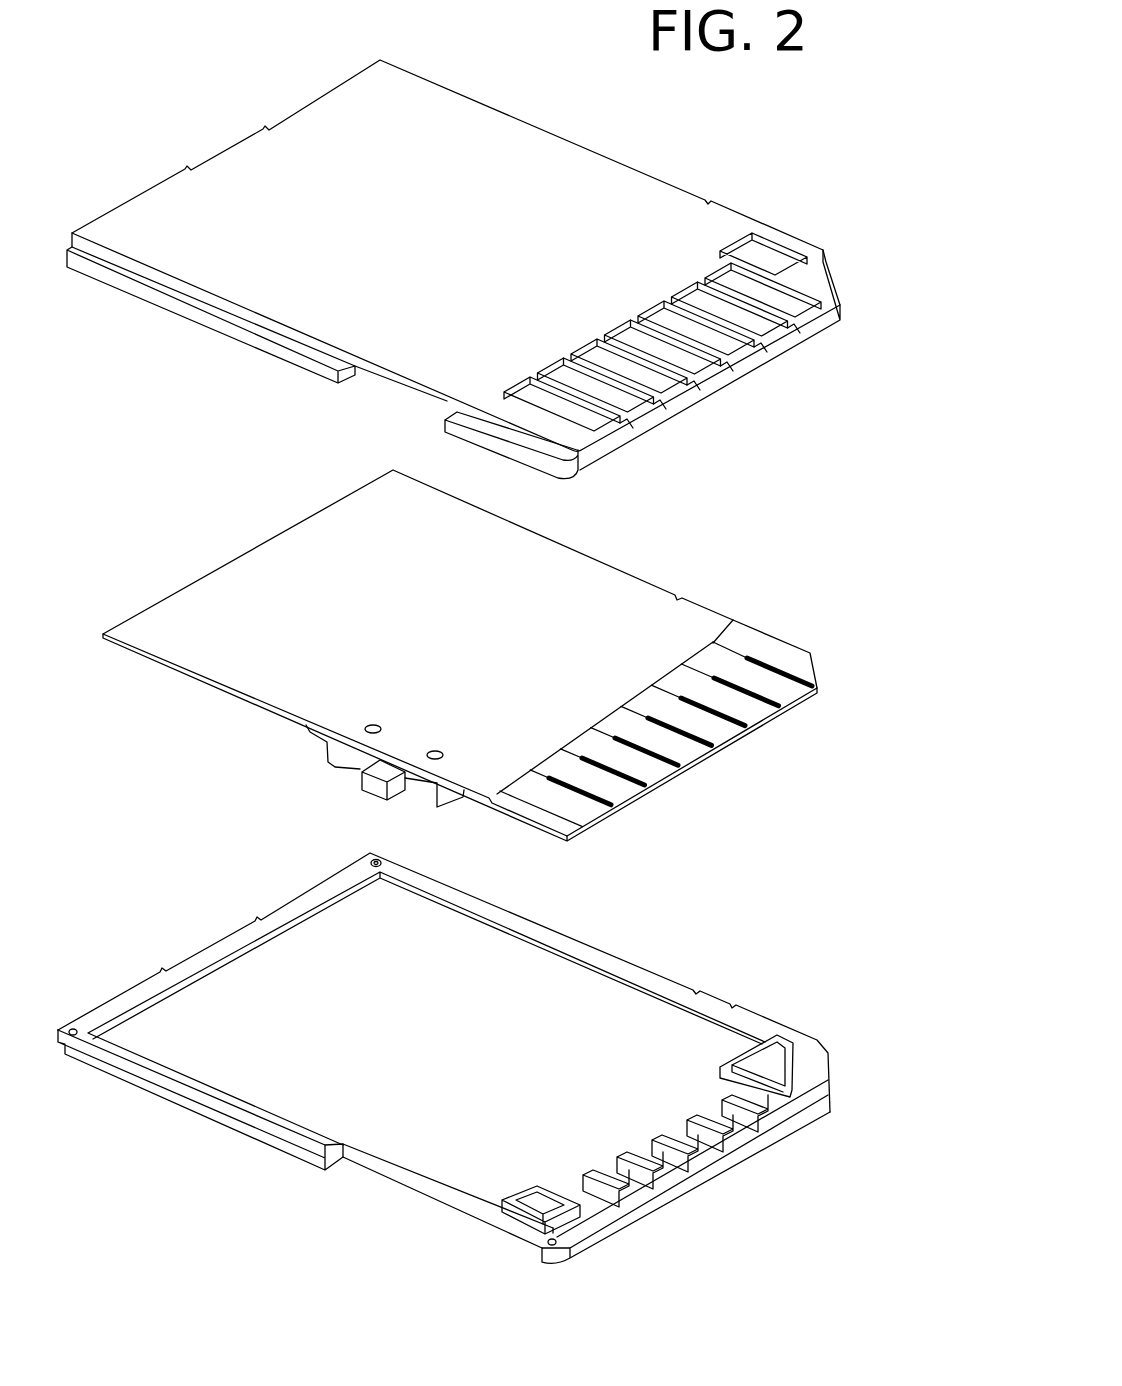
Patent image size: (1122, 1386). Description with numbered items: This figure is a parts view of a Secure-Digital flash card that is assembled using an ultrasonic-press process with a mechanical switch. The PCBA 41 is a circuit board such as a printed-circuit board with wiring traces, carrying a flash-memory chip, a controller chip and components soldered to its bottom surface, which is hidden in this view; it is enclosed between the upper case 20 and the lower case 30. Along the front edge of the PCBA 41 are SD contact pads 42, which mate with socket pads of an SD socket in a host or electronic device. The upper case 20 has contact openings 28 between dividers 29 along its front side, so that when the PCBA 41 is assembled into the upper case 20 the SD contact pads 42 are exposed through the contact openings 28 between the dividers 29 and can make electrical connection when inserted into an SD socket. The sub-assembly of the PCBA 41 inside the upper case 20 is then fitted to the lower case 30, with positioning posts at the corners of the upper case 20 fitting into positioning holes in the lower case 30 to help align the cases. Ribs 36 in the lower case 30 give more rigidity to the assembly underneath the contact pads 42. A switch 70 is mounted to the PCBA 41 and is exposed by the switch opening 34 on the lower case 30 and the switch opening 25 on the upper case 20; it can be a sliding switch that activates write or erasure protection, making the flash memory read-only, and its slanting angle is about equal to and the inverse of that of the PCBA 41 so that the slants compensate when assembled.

The upper case 20 is at (452, 252).
The switch opening 25 is at (396, 386).
The contact openings 28 is at (587, 422).
The dividers 29 is at (637, 427).
The lower case 30 is at (477, 1077).
The switch opening 34 is at (390, 1177).
The ribs 36 is at (658, 1140).
The PCBA 41 is at (510, 642).
The SD contact pads 42 is at (722, 733).
The switch 70 is at (367, 790).